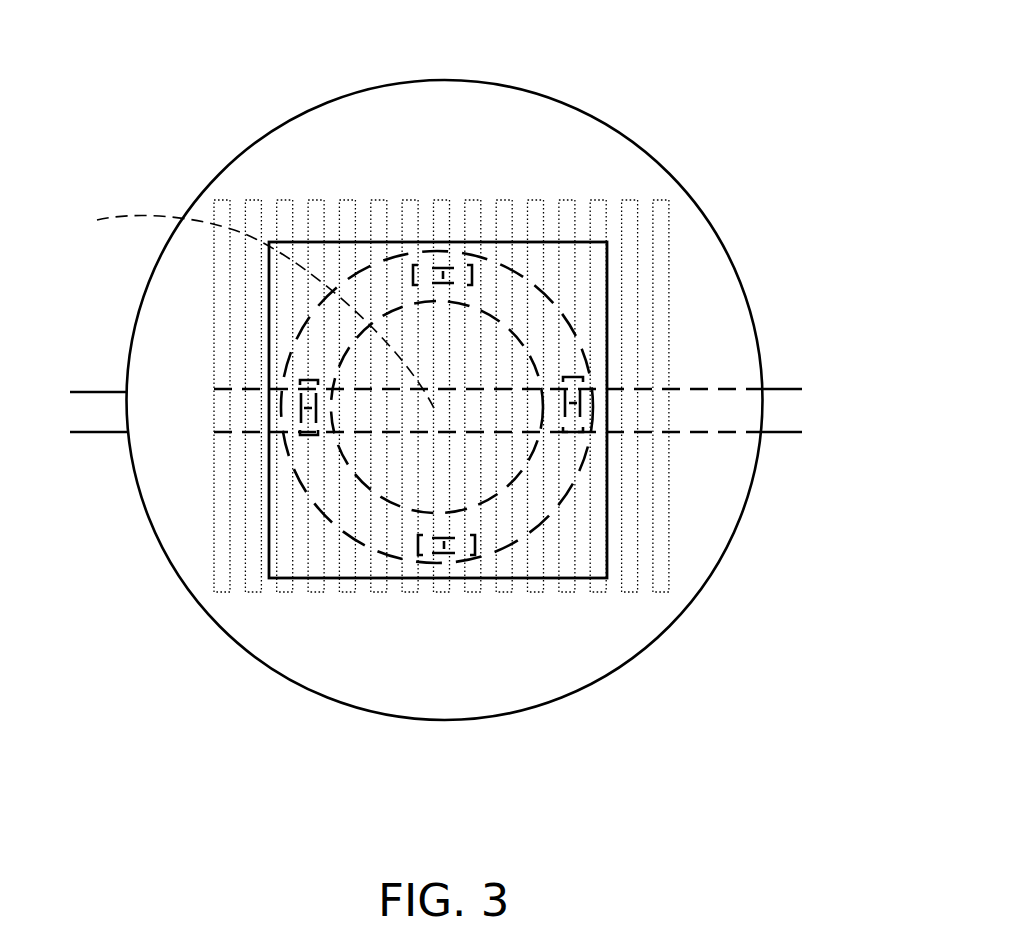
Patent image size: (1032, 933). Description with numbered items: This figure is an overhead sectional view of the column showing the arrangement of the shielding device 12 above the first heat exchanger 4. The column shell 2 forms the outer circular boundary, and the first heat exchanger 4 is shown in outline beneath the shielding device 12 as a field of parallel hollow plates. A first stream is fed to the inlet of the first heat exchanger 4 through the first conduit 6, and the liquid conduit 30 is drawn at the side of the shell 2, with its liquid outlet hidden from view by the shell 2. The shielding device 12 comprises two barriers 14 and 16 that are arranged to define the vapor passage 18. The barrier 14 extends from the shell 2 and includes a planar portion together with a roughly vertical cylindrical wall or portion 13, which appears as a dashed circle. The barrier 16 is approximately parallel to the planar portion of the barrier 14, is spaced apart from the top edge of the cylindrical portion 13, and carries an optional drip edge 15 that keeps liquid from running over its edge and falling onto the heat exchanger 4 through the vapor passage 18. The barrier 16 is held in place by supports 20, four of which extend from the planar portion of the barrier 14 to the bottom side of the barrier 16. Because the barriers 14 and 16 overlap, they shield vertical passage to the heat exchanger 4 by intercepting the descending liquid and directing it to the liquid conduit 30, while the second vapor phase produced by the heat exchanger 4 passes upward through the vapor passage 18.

The shell 2 is at (668, 170).
The first heat exchanger 4 is at (442, 176).
The first conduit 6 is at (773, 387).
The shielding device 12 is at (513, 400).
The cylindrical wall or portion 13 is at (500, 497).
The barrier 14 is at (483, 662).
The drip edge 15 is at (535, 525).
The barrier 16 is at (575, 286).
The vapor passage 18 is at (250, 308).
The supports 20 is at (572, 440).
The liquid conduit 30 is at (103, 433).